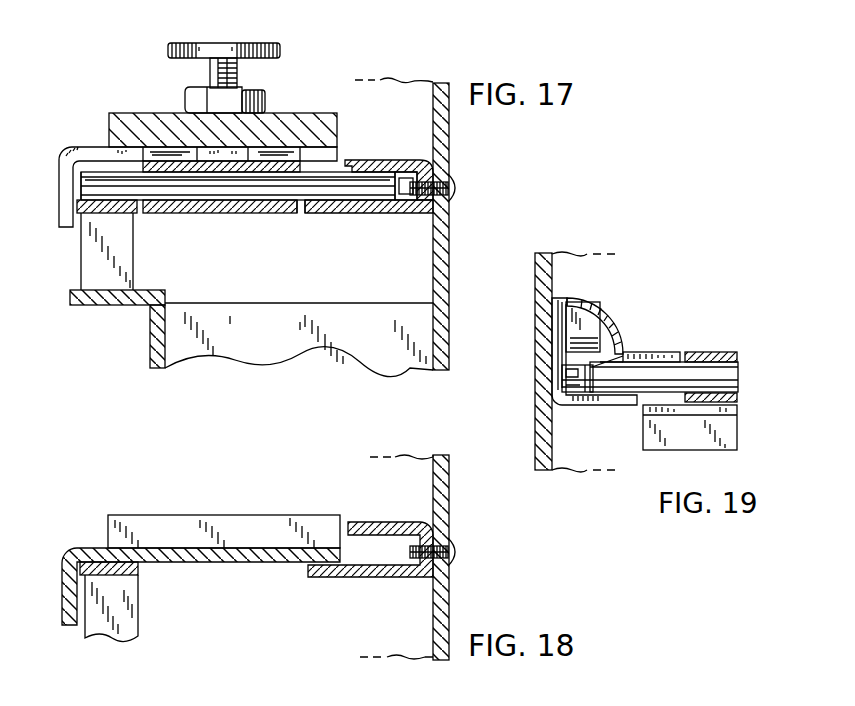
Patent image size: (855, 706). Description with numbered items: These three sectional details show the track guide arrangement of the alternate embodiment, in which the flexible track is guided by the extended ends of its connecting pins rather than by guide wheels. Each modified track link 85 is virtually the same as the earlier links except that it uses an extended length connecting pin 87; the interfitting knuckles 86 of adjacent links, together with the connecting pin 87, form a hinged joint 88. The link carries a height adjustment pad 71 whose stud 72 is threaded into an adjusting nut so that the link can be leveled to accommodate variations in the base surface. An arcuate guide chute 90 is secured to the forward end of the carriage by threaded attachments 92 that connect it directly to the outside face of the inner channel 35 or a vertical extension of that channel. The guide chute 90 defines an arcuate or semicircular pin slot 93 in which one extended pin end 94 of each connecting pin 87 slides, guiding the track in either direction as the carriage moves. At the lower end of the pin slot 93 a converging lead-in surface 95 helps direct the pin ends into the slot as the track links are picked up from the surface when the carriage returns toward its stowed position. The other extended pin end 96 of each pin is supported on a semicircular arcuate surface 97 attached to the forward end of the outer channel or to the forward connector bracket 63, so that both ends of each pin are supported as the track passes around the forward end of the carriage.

In FIG. 17, the inner channel 35 is at (450, 264).
In FIG. 18, the inner channel 35 is at (450, 505).
In FIG. 19, the inner channel 35 is at (537, 316).
In FIG. 17, the forward connector bracket 63 is at (150, 334).
In FIG. 17, the height adjustment pad 71 is at (203, 42).
In FIG. 17, the stud 72 is at (238, 73).
In FIG. 17, the modified track link 85 is at (84, 140).
In FIG. 17, the interfitting knuckles 86 is at (275, 209).
In FIG. 19, the interfitting knuckles 86 is at (732, 352).
In FIG. 17, the connecting pin 87 is at (353, 186).
In FIG. 19, the connecting pin 87 is at (698, 372).
In FIG. 17, the hinged joint 88 is at (293, 221).
In FIG. 17, the arcuate guide chute 90 is at (418, 213).
In FIG. 17, the threaded attachment 92 is at (455, 189).
In FIG. 18, the threaded attachment 92 is at (452, 556).
In FIG. 17, the pin slot 93 is at (403, 182).
In FIG. 18, the pin slot 93 is at (372, 546).
In FIG. 19, the pin slot 93 is at (575, 398).
In FIG. 17, the extended pin end 94 is at (377, 200).
In FIG. 19, the extended pin end 94 is at (603, 364).
In FIG. 19, the converging lead-in surface 95 is at (590, 310).
In FIG. 17, the other extended pin end 96 is at (122, 182).
In FIG. 17, the semicircular arcuate surface 97 is at (104, 200).